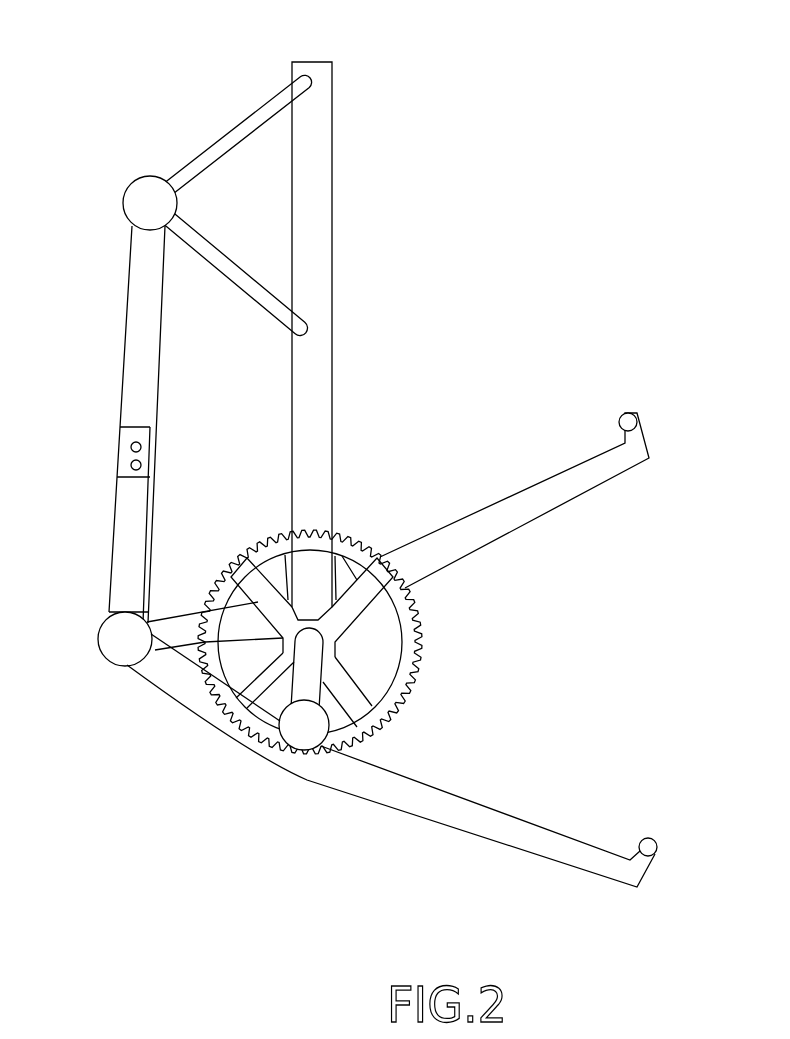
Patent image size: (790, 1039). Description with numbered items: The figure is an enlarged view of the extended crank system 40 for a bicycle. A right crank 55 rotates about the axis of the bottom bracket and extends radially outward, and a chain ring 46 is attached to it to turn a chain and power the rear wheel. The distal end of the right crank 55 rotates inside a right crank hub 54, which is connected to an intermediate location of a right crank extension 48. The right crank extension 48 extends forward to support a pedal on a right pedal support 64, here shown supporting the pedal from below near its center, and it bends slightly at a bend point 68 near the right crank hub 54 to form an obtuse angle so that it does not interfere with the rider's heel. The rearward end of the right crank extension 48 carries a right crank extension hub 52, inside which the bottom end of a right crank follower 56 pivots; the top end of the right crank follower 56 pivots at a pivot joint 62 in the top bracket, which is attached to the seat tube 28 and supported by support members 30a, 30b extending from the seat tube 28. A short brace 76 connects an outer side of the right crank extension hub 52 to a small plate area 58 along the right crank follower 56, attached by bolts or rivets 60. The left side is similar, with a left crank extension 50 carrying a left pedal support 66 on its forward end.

The seat tube 28 is at (328, 172).
The support member 30a is at (267, 105).
The support member 30b is at (227, 263).
The extended crank system 40 is at (640, 172).
The chain ring 46 is at (347, 530).
The right crank extension 48 is at (587, 847).
The left crank extension 50 is at (565, 497).
The right crank extension hub 52 is at (113, 657).
The right crank hub 54 is at (305, 743).
The right crank 55 is at (315, 667).
The right crank follower 56 is at (128, 337).
The small plate area 58 is at (118, 470).
The bolts or rivets 60 is at (131, 463).
The pivot joint 62 is at (135, 183).
The right pedal support 64 is at (656, 838).
The left pedal support 66 is at (628, 411).
The bend point 68 is at (319, 803).
The short brace 76 is at (118, 563).